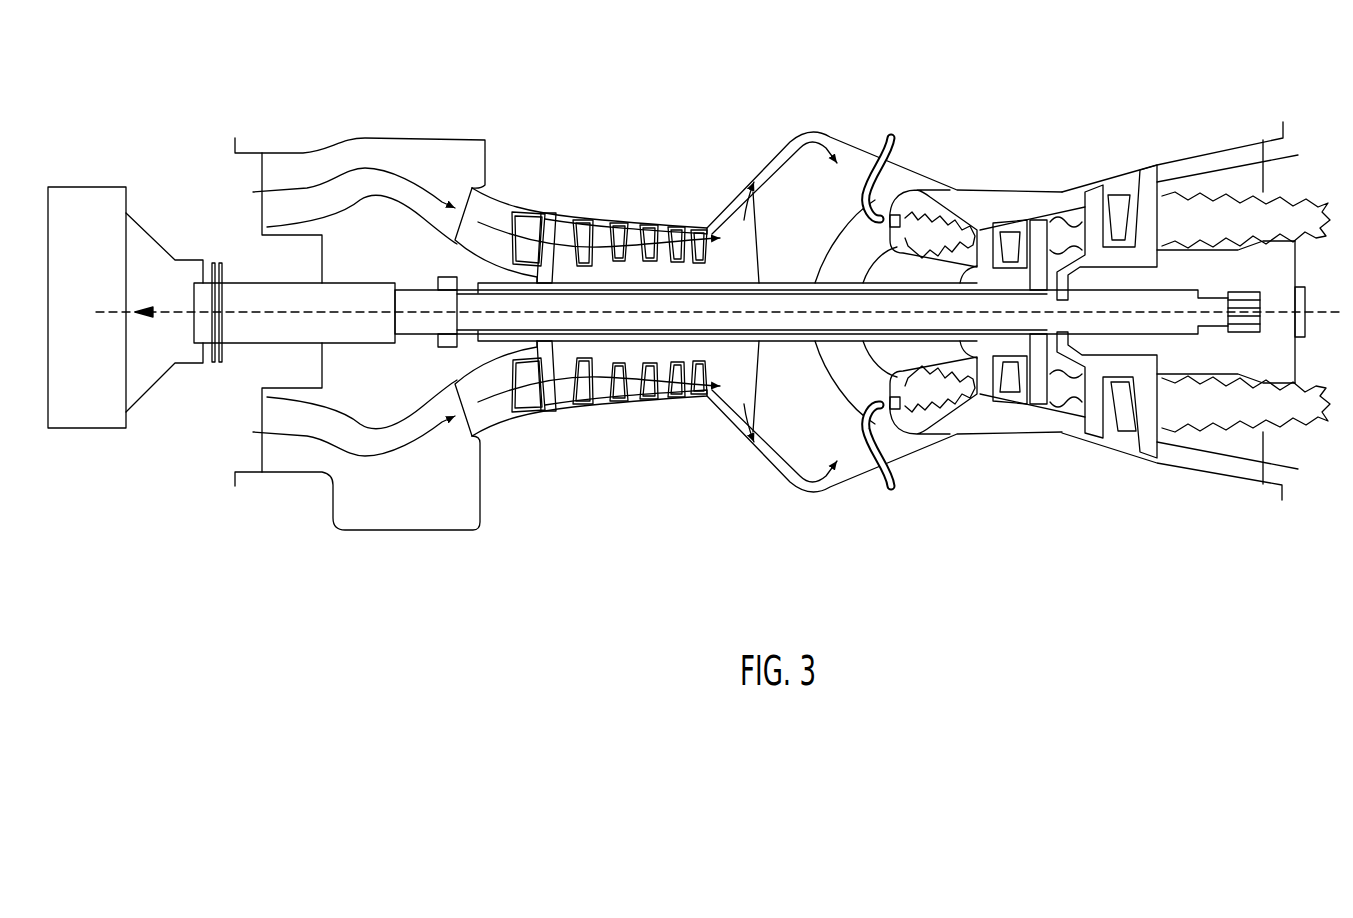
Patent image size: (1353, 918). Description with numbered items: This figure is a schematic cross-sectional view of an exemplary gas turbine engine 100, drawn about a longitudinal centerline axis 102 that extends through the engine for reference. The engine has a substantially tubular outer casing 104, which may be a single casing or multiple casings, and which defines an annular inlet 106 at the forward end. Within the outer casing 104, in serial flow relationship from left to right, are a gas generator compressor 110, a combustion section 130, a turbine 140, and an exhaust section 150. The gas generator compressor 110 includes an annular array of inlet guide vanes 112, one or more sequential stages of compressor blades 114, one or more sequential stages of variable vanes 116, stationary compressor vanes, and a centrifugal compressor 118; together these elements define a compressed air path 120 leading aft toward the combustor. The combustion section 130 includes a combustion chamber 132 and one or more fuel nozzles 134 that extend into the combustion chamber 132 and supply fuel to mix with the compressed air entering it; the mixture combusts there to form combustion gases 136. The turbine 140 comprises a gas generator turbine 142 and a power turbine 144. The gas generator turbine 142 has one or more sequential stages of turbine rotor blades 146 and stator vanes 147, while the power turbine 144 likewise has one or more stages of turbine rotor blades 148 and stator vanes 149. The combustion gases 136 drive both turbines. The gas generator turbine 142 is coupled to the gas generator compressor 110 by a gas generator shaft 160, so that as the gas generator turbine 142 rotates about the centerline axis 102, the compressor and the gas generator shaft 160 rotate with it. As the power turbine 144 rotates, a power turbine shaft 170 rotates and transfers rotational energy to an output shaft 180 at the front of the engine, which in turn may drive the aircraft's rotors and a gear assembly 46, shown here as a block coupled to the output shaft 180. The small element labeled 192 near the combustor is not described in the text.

The gear assembly 46 is at (80, 187).
The gas turbine engine 100 is at (258, 522).
The centerline axis 102 is at (123, 310).
The outer casing 104 is at (573, 211).
The annular inlet 106 is at (270, 172).
The gas generator compressor 110 is at (582, 408).
The inlet guide vanes 112 is at (523, 373).
The compressor blades 114 is at (566, 232).
The variable vanes 116 is at (620, 400).
The centrifugal compressor 118 is at (727, 403).
The compressed air path 120 is at (488, 262).
The combustion section 130 is at (857, 434).
The combustion chamber 132 is at (921, 197).
The fuel nozzles 134 is at (878, 196).
The combustion gases 136 is at (937, 393).
The turbine 140 is at (1103, 534).
The gas generator turbine 142 is at (1047, 377).
The power turbine 144 is at (1169, 193).
The turbine rotor blades 146 is at (980, 230).
The stator vanes 147 is at (1016, 240).
The turbine rotor blades 148 is at (1095, 200).
The stator vanes 149 is at (1128, 232).
The exhaust section 150 is at (1253, 491).
The gas generator shaft 160 is at (785, 274).
The power turbine shaft 170 is at (1168, 323).
The output shaft 180 is at (232, 292).
The igniter 192 is at (1000, 416).